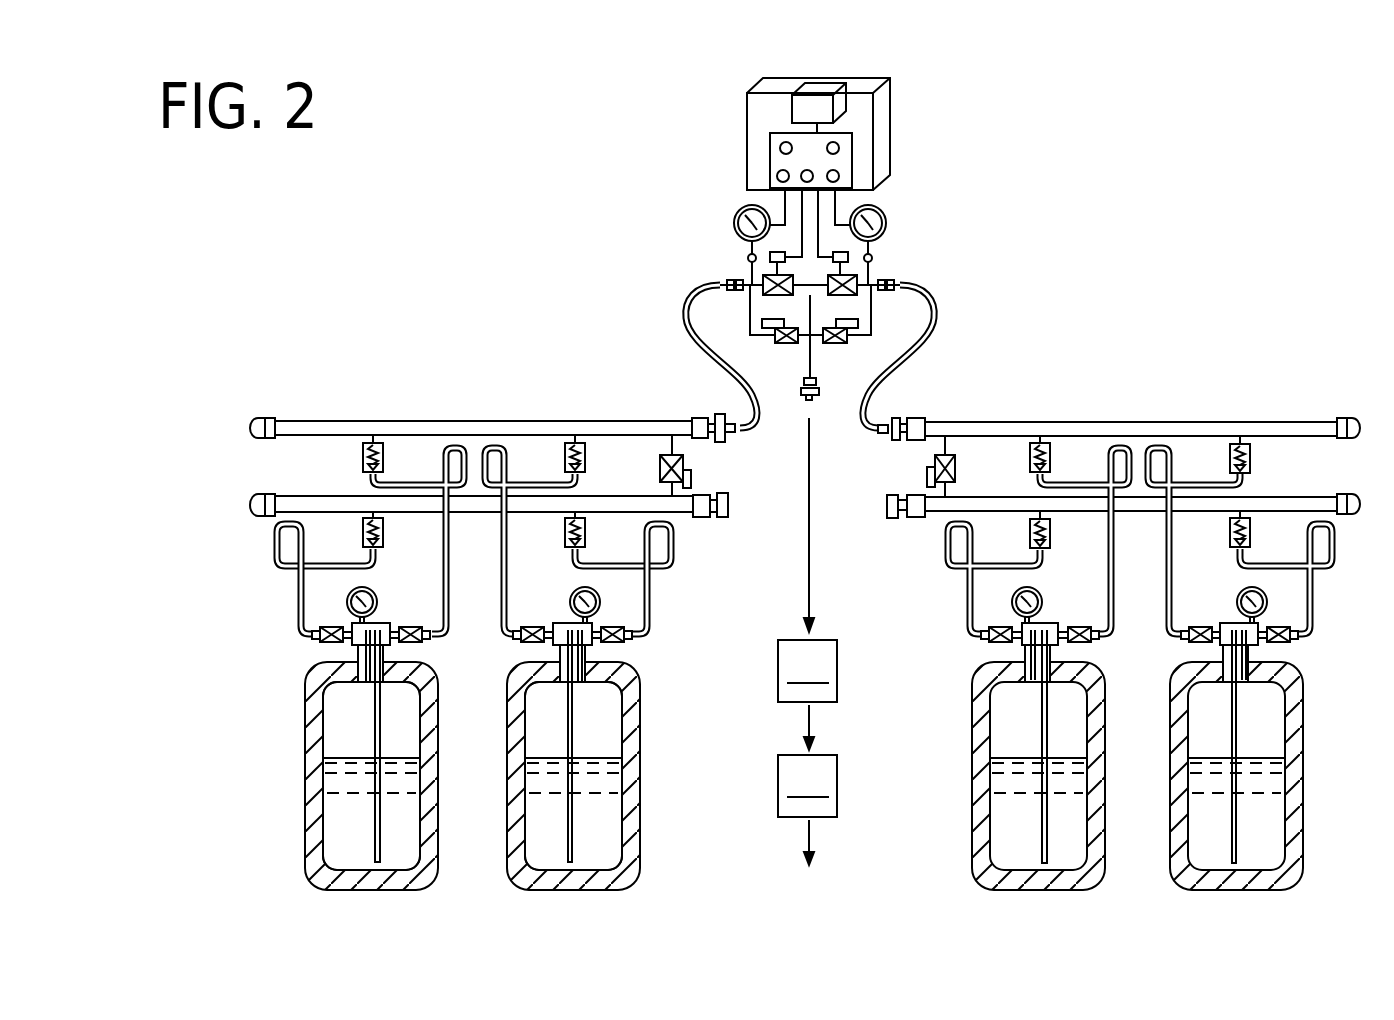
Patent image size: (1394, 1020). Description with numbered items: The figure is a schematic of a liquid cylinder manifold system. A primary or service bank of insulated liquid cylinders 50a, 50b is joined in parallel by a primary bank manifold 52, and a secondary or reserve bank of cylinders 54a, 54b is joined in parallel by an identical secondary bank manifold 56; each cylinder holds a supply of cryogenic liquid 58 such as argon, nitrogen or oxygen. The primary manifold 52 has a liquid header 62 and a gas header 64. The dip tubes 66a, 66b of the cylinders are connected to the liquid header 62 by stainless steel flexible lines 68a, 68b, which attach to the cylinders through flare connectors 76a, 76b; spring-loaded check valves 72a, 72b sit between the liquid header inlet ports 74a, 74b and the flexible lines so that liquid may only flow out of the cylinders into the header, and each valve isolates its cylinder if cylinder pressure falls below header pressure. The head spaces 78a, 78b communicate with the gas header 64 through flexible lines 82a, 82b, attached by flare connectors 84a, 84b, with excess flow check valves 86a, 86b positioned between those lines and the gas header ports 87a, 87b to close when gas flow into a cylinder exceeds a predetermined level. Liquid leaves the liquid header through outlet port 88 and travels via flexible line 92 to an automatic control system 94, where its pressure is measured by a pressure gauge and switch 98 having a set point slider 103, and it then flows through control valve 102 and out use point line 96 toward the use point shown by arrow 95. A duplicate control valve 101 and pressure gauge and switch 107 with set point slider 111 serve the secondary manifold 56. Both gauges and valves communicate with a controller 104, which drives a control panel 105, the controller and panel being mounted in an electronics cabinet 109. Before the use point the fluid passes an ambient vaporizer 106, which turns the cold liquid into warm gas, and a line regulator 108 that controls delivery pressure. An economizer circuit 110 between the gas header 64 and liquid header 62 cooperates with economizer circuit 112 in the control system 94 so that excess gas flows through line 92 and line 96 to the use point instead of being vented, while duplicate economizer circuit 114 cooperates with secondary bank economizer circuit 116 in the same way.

The liquid cylinder 50a is at (361, 738).
The liquid cylinder 50b is at (583, 738).
The primary bank manifold 52 is at (373, 337).
The liquid cylinder 54a is at (972, 840).
The liquid cylinder 54b is at (1170, 843).
The secondary bank manifold 56 is at (1247, 327).
The cryogenic liquid 58 is at (322, 792).
The liquid header 62 is at (413, 420).
The gas header 64 is at (295, 494).
The dip tube 66a is at (380, 706).
The dip tube 66b is at (588, 718).
The flexible line 68a is at (450, 605).
The flexible line 68b is at (502, 580).
The spring-loaded check valve 72a is at (363, 455).
The spring-loaded check valve 72b is at (587, 460).
The liquid header inlet port 74a is at (378, 438).
The liquid header inlet port 74b is at (568, 438).
The flare connector 76a is at (412, 627).
The flare connector 76b is at (532, 627).
The head space 78a is at (352, 718).
The head space 78b is at (603, 733).
The flexible line 82a is at (300, 597).
The flexible line 82b is at (648, 593).
The flare connector 84a is at (328, 642).
The flare connector 84b is at (618, 643).
The excess flow check valve 86a is at (363, 540).
The excess flow check valve 86b is at (583, 528).
The gas header port 87a is at (375, 513).
The gas header port 87b is at (567, 513).
The outlet port 88 is at (730, 422).
The flexible line 92 is at (684, 325).
The automatic control system 94 is at (677, 102).
The arrow 95 is at (810, 538).
The use point line 96 is at (805, 362).
The pressure gauge and switch 98 is at (734, 227).
The control valve 101 is at (870, 277).
The control valve 102 is at (750, 277).
The pressure switch set point slider 103 is at (750, 210).
The controller 104 is at (842, 103).
The control panel 105 is at (850, 163).
The ambient vaporizer 106 is at (807, 695).
The pressure gauge and switch 107 is at (886, 227).
The line regulator 108 is at (807, 810).
The electronics cabinet 109 is at (797, 78).
The economizer circuit 110 is at (691, 472).
The set point slider 111 is at (870, 211).
The economizer circuit 112 is at (792, 345).
The economizer circuit 114 is at (830, 345).
The economizer circuit 116 is at (927, 476).